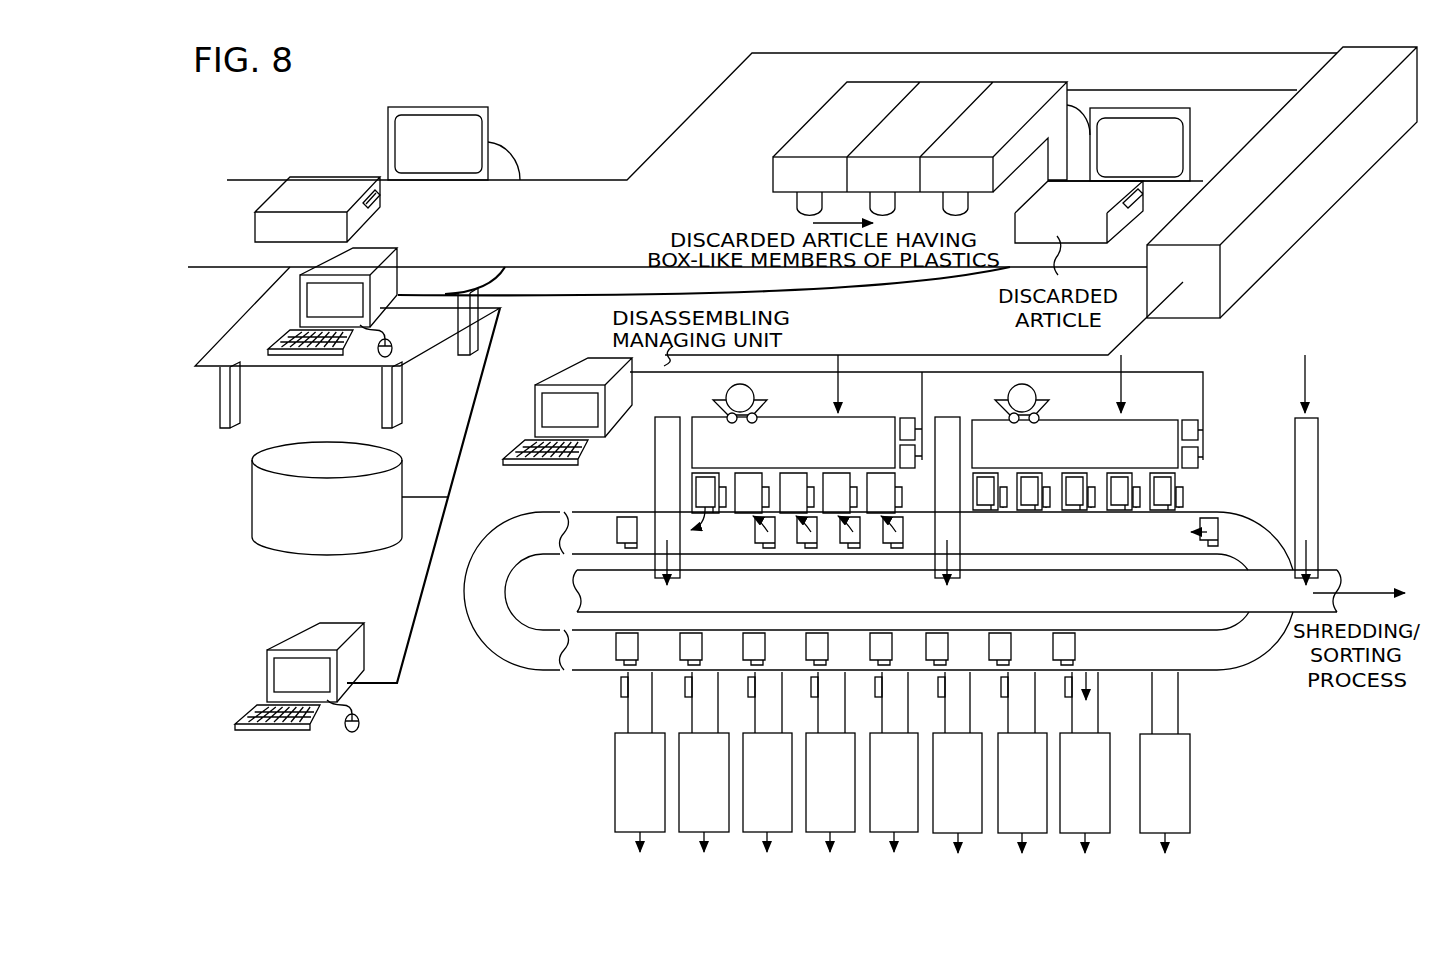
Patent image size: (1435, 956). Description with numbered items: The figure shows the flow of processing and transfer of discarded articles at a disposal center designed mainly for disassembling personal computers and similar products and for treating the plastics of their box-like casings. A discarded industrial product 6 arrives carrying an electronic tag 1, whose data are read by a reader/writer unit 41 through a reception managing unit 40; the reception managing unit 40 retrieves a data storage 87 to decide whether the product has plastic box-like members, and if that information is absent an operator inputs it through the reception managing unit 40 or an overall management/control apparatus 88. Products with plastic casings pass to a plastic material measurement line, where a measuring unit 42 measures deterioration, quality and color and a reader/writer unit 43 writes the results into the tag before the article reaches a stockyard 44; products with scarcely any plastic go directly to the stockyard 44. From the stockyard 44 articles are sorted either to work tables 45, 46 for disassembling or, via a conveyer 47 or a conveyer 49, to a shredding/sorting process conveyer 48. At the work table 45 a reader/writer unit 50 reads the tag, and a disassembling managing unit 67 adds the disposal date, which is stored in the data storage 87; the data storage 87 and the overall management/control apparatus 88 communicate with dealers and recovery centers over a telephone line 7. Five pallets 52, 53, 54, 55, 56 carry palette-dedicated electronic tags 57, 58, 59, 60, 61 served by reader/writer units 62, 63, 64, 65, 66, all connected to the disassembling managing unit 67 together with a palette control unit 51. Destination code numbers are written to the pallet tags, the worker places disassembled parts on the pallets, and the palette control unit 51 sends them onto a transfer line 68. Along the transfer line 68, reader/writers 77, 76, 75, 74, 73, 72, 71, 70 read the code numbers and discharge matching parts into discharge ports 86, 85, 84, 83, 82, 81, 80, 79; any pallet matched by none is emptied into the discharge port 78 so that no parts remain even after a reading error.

The electronic tag 1 is at (383, 199).
The discarded industrial product 6 is at (337, 177).
The telephone line 7 is at (405, 660).
The reception managing unit 40 is at (396, 264).
The reader/writer unit 41 is at (440, 106).
The measuring unit 42 is at (834, 92).
The reader/writer unit 43 is at (1192, 125).
The stockyard 44 is at (1283, 247).
The work table 45 is at (1078, 430).
The work table 46 is at (870, 430).
The conveyer 47 is at (1318, 455).
The shredding/sorting process conveyer 48 is at (1323, 580).
The conveyer 49 is at (947, 430).
The reader/writer unit 50 is at (1190, 428).
The palette control unit 51 is at (1190, 460).
The pallet 52 is at (1160, 487).
The pallet 53 is at (1117, 487).
The pallet 54 is at (1072, 487).
The pallet 55 is at (1027, 487).
The pallet 56 is at (983, 487).
The palette-dedicated electronic tag 57 is at (1163, 512).
The palette-dedicated electronic tag 58 is at (1120, 512).
The palette-dedicated electronic tag 59 is at (1075, 512).
The palette-dedicated electronic tag 60 is at (1030, 512).
The palette-dedicated electronic tag 61 is at (986, 512).
The reader/writer unit 62 is at (1179, 508).
The reader/writer unit 63 is at (1136, 508).
The reader/writer unit 64 is at (1091, 508).
The reader/writer unit 65 is at (1046, 508).
The reader/writer unit 66 is at (1003, 508).
The disassembling managing unit 67 is at (590, 358).
The transfer line 68 is at (1255, 538).
The reader/writer 70 is at (1068, 686).
The reader/writer 71 is at (1003, 686).
The reader/writer 72 is at (940, 686).
The reader/writer 73 is at (877, 686).
The reader/writer 74 is at (813, 686).
The reader/writer 75 is at (750, 686).
The reader/writer 76 is at (686, 686).
The reader/writer 77 is at (622, 686).
The discharge port 78 is at (1180, 833).
The discharge port 79 is at (1100, 833).
The discharge port 80 is at (1037, 833).
The discharge port 81 is at (972, 833).
The discharge port 82 is at (908, 832).
The discharge port 83 is at (845, 832).
The discharge port 84 is at (782, 832).
The discharge port 85 is at (719, 832).
The discharge port 86 is at (655, 832).
The data storage 87 is at (252, 498).
The overall management/control apparatus 88 is at (338, 627).